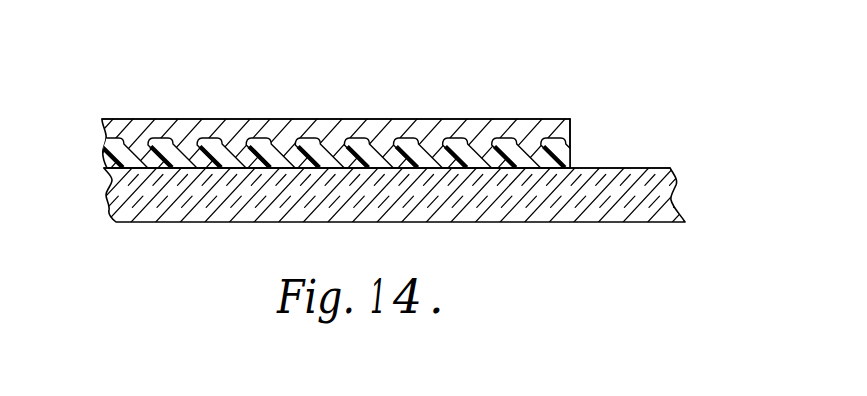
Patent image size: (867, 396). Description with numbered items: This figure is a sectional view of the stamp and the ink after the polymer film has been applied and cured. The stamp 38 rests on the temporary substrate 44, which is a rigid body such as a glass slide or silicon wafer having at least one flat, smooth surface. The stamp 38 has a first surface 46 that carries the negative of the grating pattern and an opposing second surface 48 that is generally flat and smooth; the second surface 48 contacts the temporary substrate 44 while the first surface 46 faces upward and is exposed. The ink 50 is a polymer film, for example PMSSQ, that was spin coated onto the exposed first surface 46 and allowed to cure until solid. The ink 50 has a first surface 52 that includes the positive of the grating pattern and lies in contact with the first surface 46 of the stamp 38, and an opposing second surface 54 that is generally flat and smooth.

The stamp 38 is at (577, 161).
The temporary substrate 44 is at (660, 190).
The first surface 46 is at (124, 149).
The second surface 48 is at (122, 168).
The ink 50 is at (472, 118).
The first surface 52 is at (162, 140).
The second surface 54 is at (267, 118).